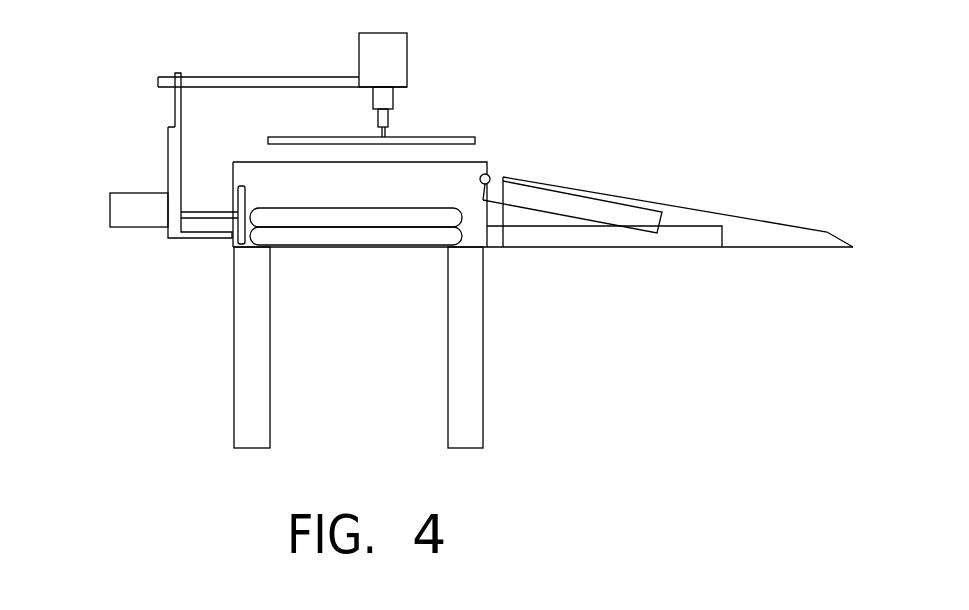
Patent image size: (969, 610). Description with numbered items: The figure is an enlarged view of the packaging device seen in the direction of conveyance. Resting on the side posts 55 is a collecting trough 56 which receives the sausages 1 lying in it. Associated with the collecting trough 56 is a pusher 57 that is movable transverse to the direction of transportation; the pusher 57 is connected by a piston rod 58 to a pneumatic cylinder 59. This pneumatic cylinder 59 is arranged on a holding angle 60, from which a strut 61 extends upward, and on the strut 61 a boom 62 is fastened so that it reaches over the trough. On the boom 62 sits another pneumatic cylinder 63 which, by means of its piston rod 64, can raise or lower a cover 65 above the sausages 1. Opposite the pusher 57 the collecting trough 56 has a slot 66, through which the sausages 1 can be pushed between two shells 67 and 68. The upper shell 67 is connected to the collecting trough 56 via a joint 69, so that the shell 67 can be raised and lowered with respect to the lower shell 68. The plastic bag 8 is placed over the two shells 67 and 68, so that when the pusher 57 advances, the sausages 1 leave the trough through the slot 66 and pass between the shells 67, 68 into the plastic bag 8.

The sausages 1 is at (342, 236).
The plastic bag 8 is at (700, 215).
The side posts 55 is at (255, 323).
The collecting trough 56 is at (468, 170).
The pusher 57 is at (238, 176).
The piston rod 58 is at (207, 215).
The pneumatic cylinder 59 is at (123, 205).
The holding angle 60 is at (168, 148).
The strut 61 is at (175, 97).
The boom 62 is at (262, 77).
The pneumatic cylinder 63 is at (398, 53).
The piston rod 64 is at (393, 93).
The cover 65 is at (450, 137).
The slot 66 is at (486, 226).
The shell 67 is at (567, 202).
The shell 68 is at (623, 238).
The joint 69 is at (492, 176).